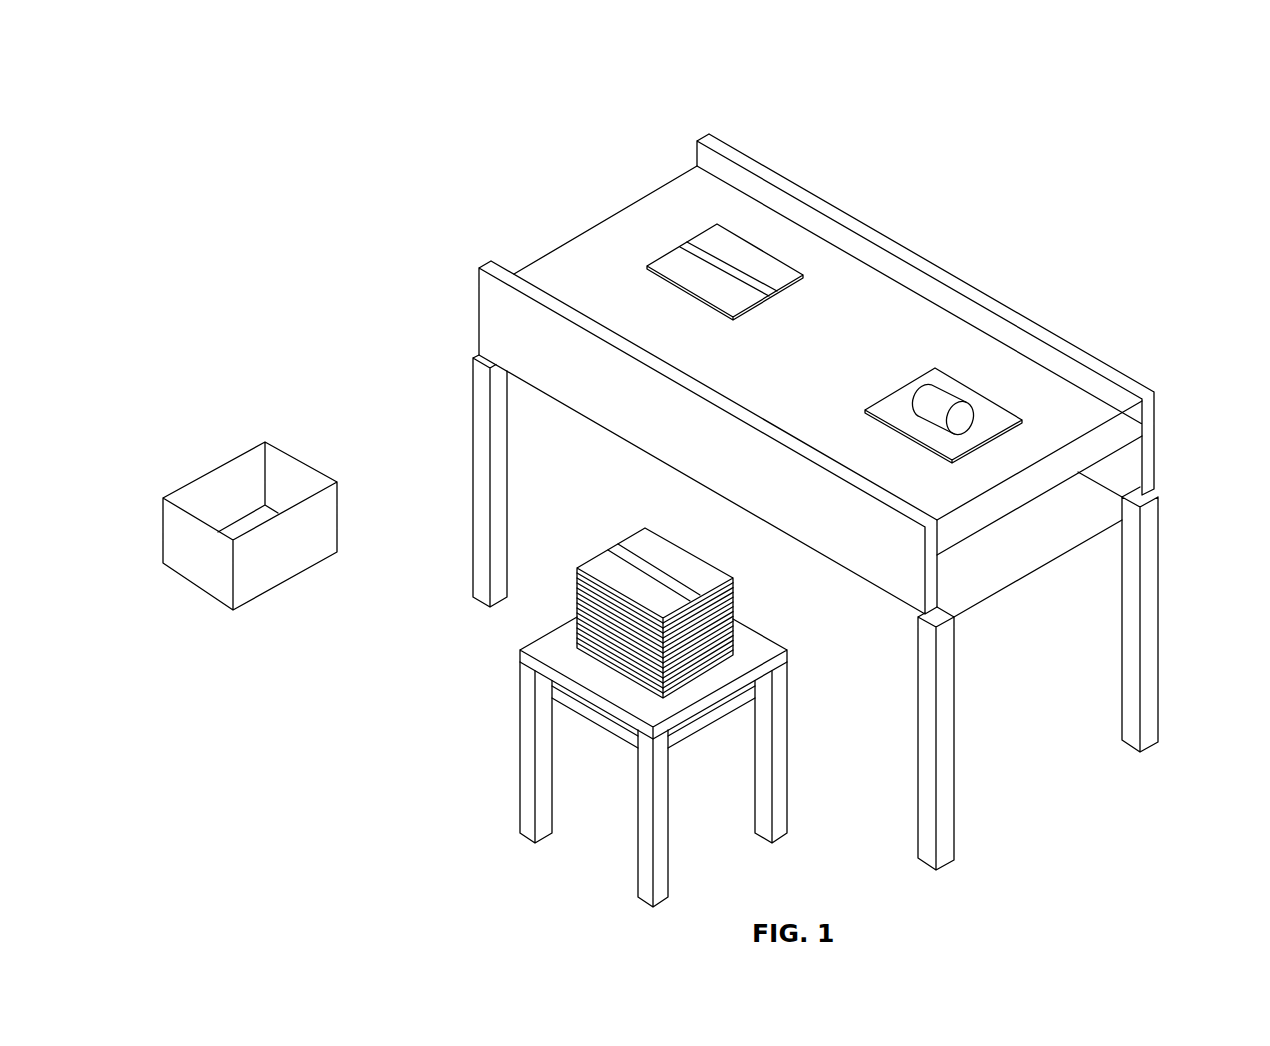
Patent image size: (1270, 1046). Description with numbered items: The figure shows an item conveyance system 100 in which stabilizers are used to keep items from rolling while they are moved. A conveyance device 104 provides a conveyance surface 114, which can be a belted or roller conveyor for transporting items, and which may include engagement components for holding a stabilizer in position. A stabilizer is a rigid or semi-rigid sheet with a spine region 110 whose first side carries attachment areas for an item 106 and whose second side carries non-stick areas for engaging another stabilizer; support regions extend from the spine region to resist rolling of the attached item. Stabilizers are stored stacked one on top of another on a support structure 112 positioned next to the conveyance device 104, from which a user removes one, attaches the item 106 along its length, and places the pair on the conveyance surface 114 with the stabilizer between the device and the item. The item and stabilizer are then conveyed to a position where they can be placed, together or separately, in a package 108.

The item conveyance system 100 is at (335, 126).
The conveyance device 104 is at (1152, 397).
The item 106 is at (947, 400).
The package 108 is at (265, 441).
The spine region 110 is at (688, 248).
The support structure 112 is at (520, 722).
The conveyance surface 114 is at (888, 301).